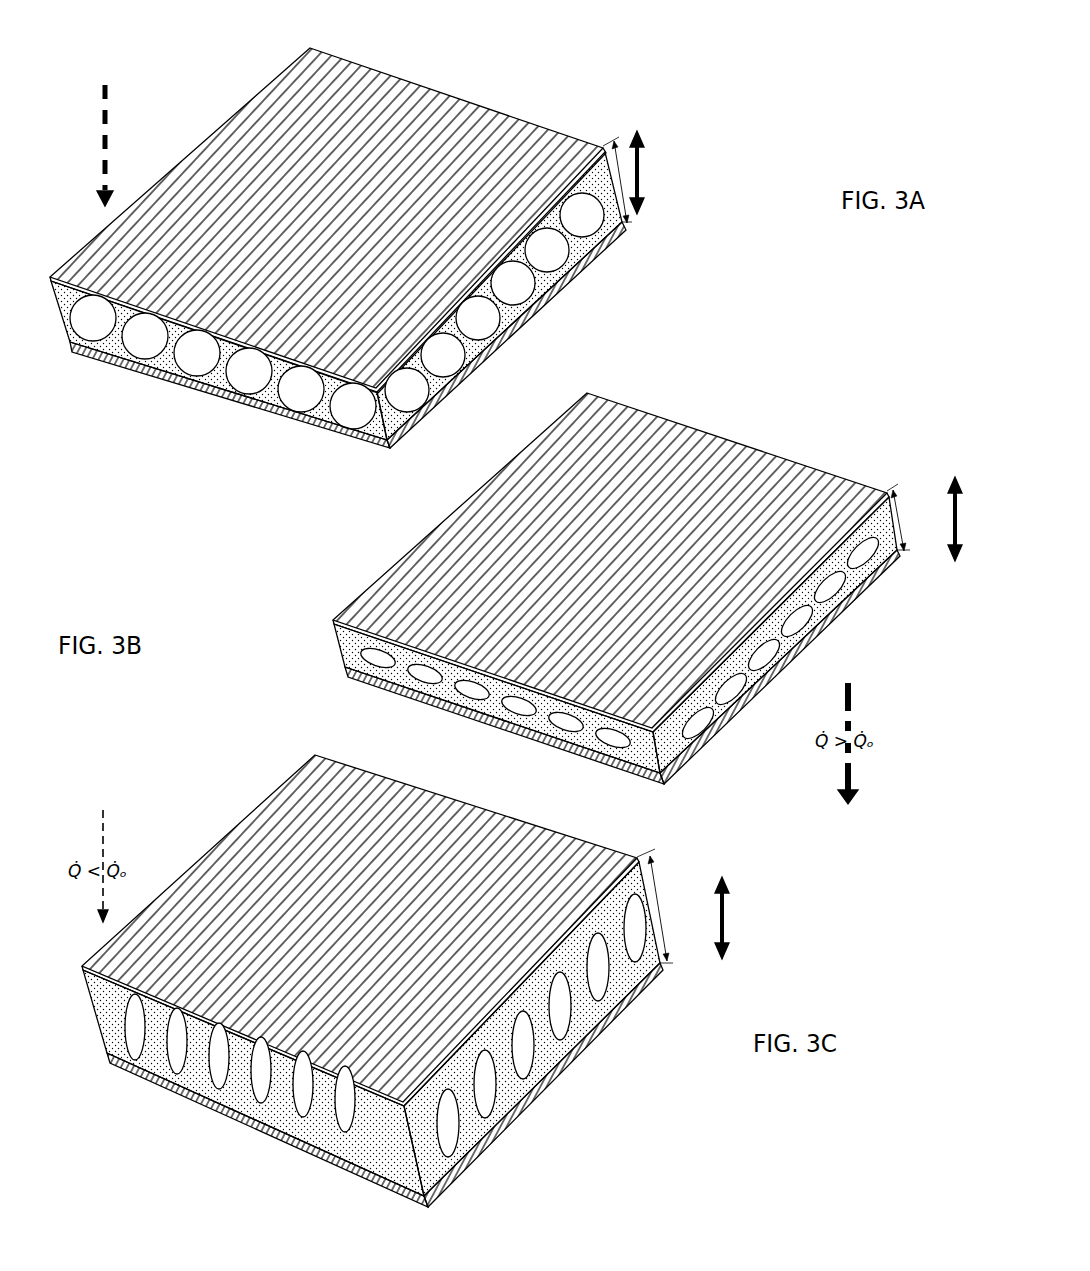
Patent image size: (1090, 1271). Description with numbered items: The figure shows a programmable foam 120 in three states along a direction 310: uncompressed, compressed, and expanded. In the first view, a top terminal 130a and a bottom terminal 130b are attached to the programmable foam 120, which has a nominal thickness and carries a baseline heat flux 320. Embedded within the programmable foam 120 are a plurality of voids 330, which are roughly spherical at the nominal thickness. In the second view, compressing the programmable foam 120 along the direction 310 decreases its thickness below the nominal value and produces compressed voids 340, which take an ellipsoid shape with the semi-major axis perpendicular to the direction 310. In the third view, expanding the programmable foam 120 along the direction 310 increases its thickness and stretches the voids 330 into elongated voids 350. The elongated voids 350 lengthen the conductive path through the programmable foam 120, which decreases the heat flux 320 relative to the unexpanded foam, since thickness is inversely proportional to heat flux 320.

In FIG. 3A, the programmable foam 120 is at (318, 407).
In FIG. 3B, the programmable foam 120 is at (658, 760).
In FIG. 3C, the programmable foam 120 is at (156, 1045).
In FIG. 3A, the top terminal 130a is at (428, 90).
In FIG. 3A, the bottom terminal 130b is at (163, 385).
In FIG. 3A, the direction 310 is at (640, 166).
In FIG. 3B, the direction 310 is at (936, 500).
In FIG. 3C, the direction 310 is at (722, 909).
In FIG. 3A, the heat flux 320 is at (106, 86).
In FIG. 3A, the voids 330 is at (600, 228).
In FIG. 3B, the compressed voids 340 is at (870, 555).
In FIG. 3C, the elongated voids 350 is at (577, 1030).